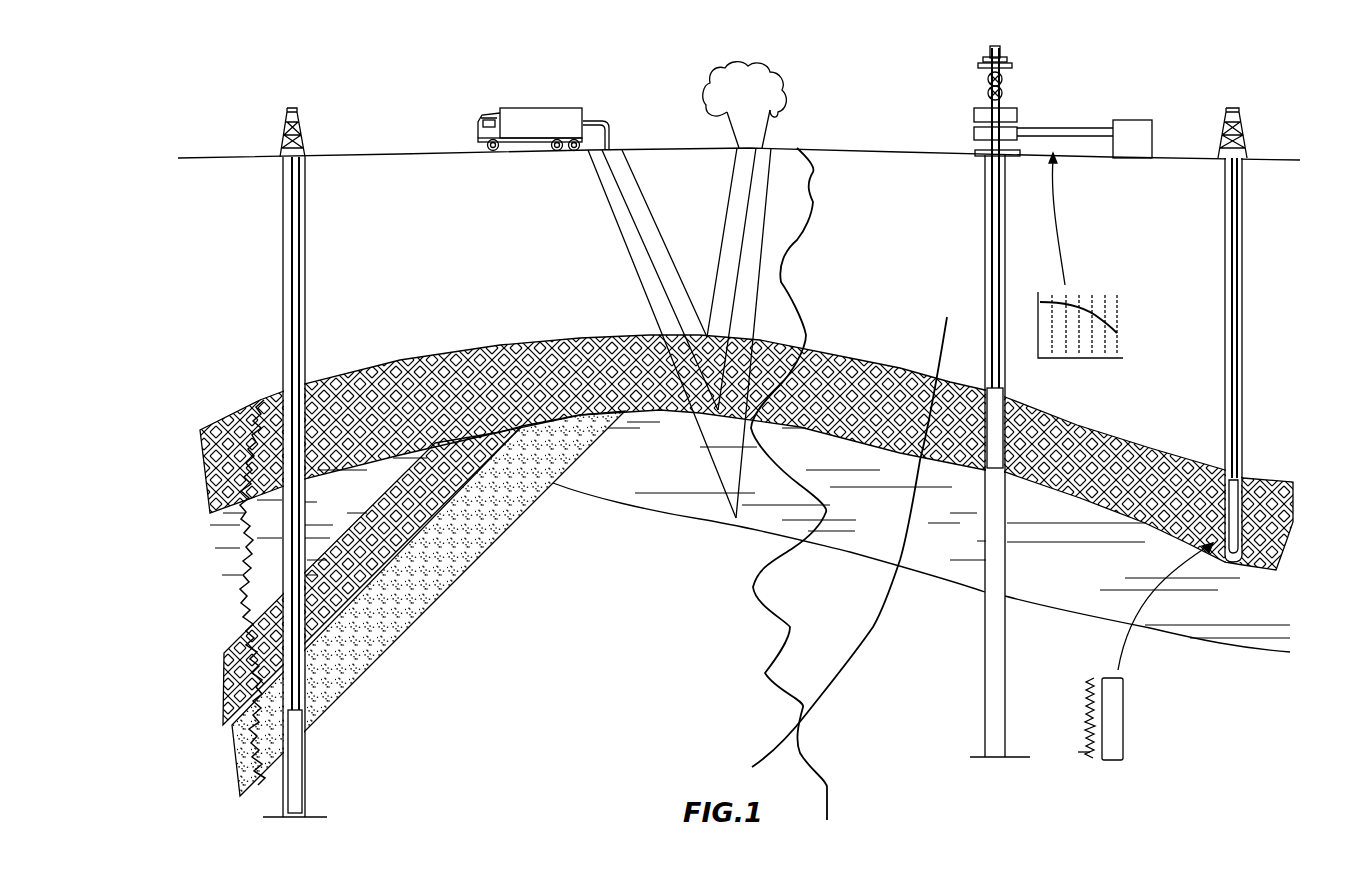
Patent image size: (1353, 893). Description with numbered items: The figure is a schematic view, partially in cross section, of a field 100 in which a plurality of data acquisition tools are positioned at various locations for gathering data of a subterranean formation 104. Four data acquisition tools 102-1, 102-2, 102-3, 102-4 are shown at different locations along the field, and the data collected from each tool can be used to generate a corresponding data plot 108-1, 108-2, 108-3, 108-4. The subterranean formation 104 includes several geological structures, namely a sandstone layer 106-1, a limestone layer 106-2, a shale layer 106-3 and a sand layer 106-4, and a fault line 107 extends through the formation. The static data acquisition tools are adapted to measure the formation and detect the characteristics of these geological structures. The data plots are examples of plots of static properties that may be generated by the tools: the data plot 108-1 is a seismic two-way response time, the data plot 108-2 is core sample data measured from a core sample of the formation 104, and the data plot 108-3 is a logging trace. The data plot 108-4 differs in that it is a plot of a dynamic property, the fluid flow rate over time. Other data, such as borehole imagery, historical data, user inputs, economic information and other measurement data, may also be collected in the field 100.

The field 100 is at (1176, 109).
The data acquisition tool 102-1 is at (508, 105).
The data acquisition tool 102-2 is at (1277, 556).
The data acquisition tool 102-3 is at (303, 763).
The data acquisition tool 102-4 is at (1003, 465).
The subterranean formation 104 is at (608, 604).
The sandstone layer 106-1 is at (437, 403).
The limestone layer 106-2 is at (360, 504).
The shale layer 106-3 is at (424, 523).
The sand layer 106-4 is at (460, 573).
The fault line 107 is at (943, 335).
The data plot 108-1 is at (787, 637).
The data plot 108-2 is at (1090, 690).
The data plot 108-3 is at (257, 592).
The data plot 108-4 is at (1085, 358).